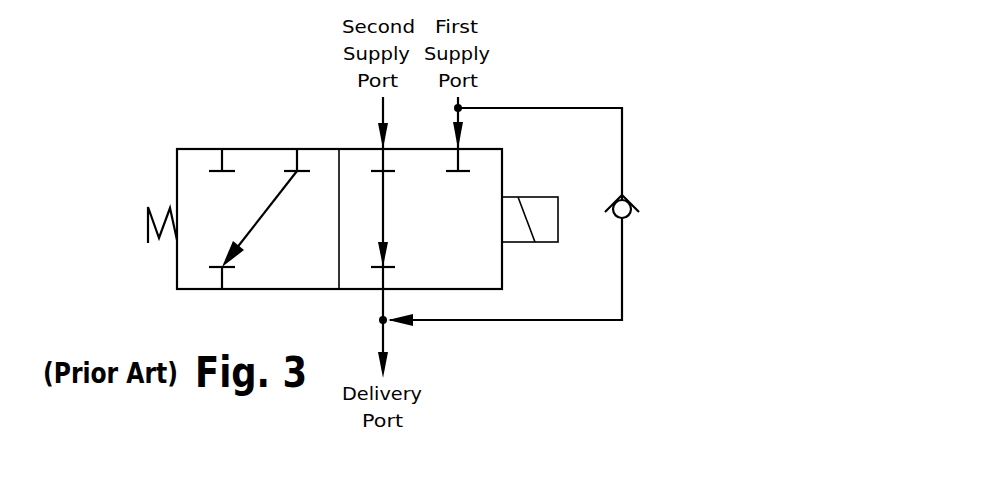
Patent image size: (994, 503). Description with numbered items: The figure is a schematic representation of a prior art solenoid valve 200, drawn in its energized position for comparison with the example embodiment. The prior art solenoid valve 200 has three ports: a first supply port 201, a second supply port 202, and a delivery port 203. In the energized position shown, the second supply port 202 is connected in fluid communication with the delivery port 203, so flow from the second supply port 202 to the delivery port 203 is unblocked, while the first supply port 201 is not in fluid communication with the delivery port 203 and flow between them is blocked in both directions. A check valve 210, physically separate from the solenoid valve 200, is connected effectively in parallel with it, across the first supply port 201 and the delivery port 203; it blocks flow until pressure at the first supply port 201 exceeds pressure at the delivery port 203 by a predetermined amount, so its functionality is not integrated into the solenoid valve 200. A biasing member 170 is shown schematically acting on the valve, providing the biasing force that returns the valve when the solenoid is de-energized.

The prior art solenoid valve 200 is at (188, 97).
The second biasing member 170 is at (150, 244).
The second supply port 202 is at (380, 147).
The first supply port 201 is at (492, 138).
The check valve 210 is at (625, 198).
The delivery port 203 is at (382, 290).